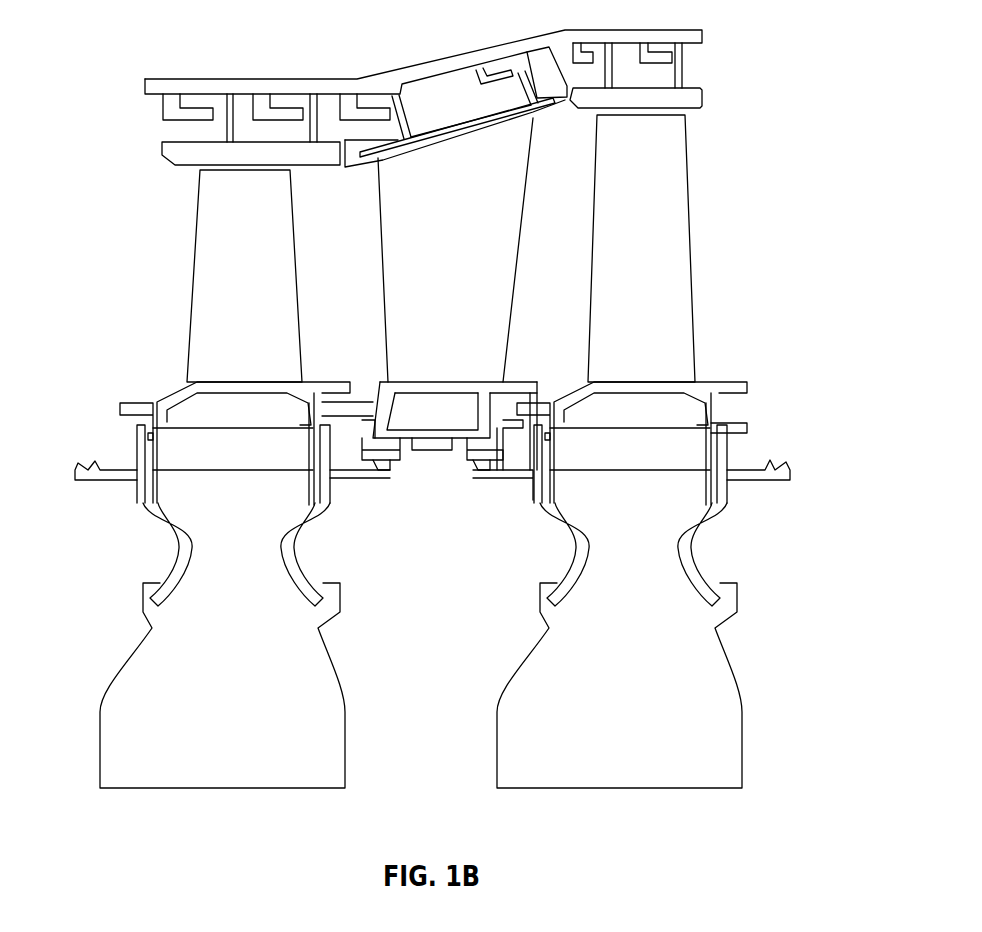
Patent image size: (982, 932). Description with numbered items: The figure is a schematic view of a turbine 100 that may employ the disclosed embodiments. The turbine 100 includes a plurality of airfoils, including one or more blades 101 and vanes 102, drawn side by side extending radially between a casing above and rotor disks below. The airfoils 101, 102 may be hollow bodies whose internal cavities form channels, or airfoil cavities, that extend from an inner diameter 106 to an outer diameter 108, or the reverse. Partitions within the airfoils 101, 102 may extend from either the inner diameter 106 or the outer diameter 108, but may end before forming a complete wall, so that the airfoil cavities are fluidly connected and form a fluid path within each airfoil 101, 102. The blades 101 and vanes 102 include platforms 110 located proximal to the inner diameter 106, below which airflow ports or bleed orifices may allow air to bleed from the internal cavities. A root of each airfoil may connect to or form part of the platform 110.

The turbine 100 is at (128, 31).
The blade 101 is at (283, 262).
The vane 102 is at (505, 255).
The inner diameter 106 is at (380, 372).
The outer diameter 108 is at (180, 182).
The platform 110 is at (518, 378).